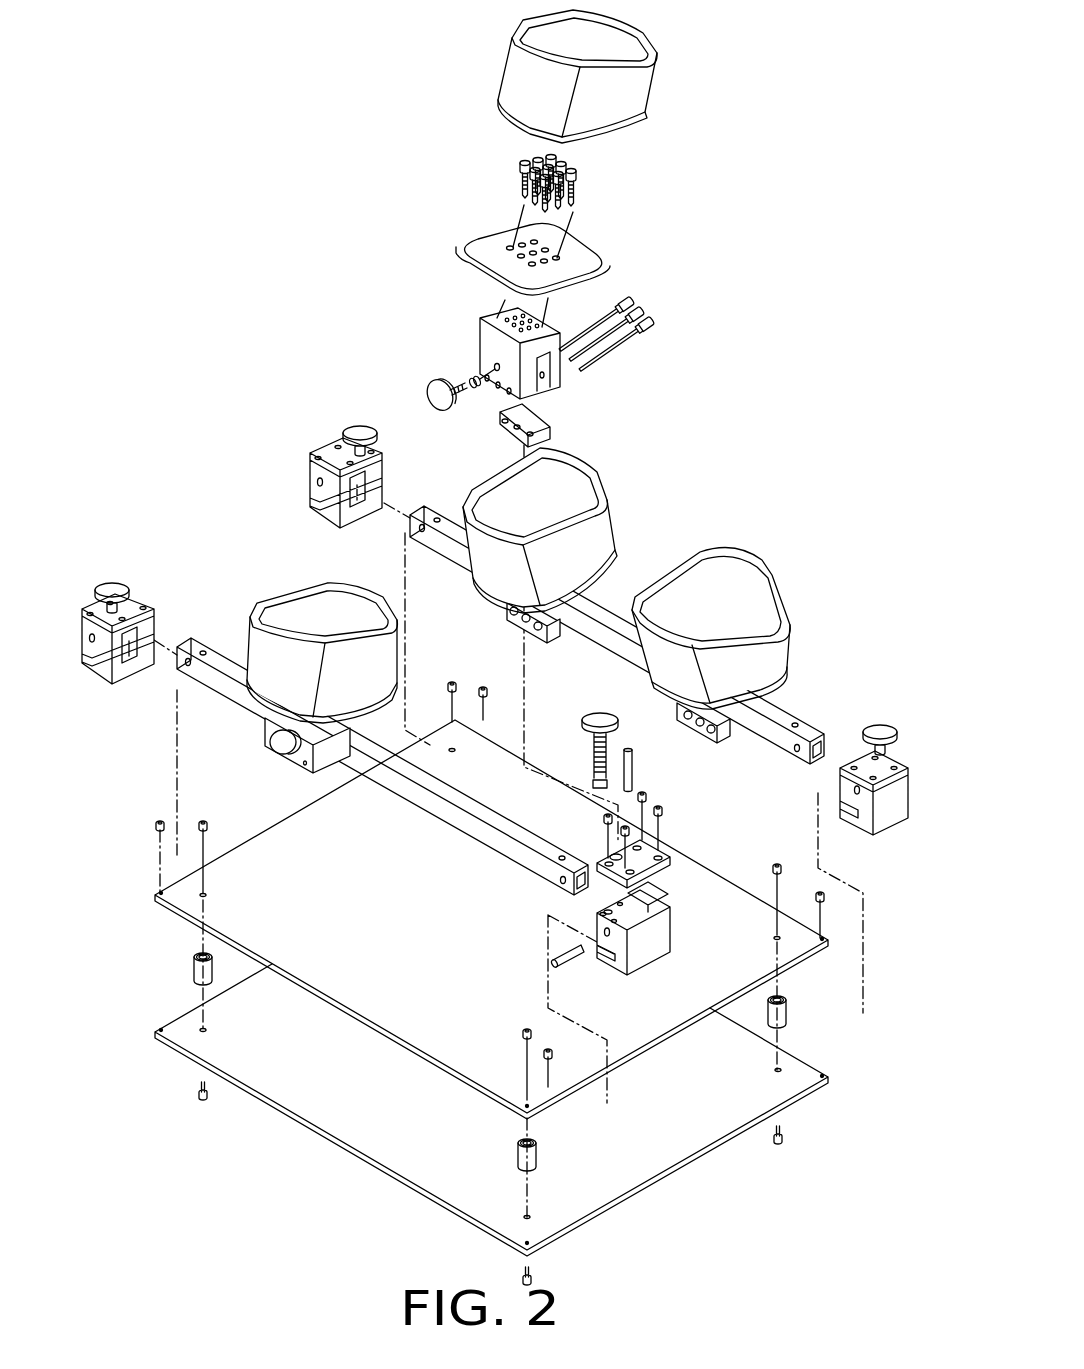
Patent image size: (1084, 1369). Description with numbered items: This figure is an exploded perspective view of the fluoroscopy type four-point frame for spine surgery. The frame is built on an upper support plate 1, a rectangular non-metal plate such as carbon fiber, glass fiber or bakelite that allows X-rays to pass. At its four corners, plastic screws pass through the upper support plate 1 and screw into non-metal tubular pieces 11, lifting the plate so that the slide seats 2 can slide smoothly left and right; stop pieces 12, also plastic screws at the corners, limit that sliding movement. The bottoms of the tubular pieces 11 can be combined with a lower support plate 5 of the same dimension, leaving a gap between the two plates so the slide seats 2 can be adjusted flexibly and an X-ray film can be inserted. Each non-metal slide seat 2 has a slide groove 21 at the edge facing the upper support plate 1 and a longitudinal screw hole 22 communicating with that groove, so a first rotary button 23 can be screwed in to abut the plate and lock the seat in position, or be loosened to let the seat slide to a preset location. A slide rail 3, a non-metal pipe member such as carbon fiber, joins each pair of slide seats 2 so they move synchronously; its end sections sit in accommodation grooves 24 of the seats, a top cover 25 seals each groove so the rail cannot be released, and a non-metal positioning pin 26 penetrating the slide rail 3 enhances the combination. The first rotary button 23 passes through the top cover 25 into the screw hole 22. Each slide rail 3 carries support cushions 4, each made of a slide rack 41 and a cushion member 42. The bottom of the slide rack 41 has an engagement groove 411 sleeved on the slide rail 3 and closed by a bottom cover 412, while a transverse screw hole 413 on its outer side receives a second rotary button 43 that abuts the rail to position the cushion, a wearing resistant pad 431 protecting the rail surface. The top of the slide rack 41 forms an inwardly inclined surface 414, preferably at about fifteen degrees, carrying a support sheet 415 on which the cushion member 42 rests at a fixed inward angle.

The upper support plate 1 is at (442, 1030).
The lower support plate 5 is at (280, 1087).
The tubular piece 11 is at (193, 963).
The stop piece 12 is at (452, 680).
The slide seat 2 is at (85, 600).
The slide groove 21 is at (602, 958).
The screw hole 22 is at (598, 915).
The first rotary button 23 is at (600, 722).
The accommodation groove 24 is at (657, 887).
The top cover 25 is at (640, 840).
The positioning pin 26 is at (633, 757).
The slide rail 3 is at (443, 812).
The support cushion 4 is at (742, 568).
The slide rack 41 is at (557, 368).
The engagement groove 411 is at (540, 385).
The bottom cover 412 is at (545, 432).
The screw hole 413 is at (495, 387).
The inclined surface 414 is at (498, 318).
The support sheet 415 is at (583, 250).
The cushion member 42 is at (515, 73).
The second rotary button 43 is at (440, 393).
The wearing resistant pad 431 is at (478, 378).